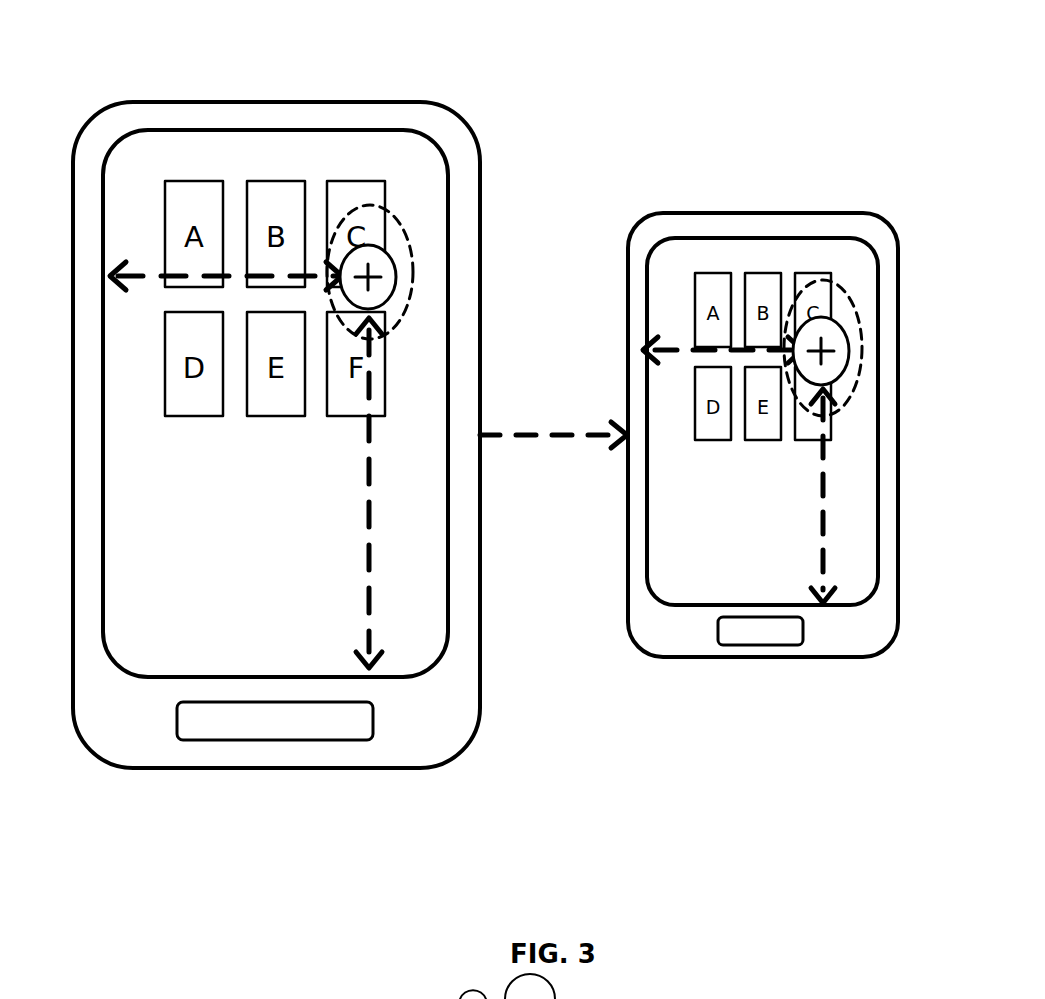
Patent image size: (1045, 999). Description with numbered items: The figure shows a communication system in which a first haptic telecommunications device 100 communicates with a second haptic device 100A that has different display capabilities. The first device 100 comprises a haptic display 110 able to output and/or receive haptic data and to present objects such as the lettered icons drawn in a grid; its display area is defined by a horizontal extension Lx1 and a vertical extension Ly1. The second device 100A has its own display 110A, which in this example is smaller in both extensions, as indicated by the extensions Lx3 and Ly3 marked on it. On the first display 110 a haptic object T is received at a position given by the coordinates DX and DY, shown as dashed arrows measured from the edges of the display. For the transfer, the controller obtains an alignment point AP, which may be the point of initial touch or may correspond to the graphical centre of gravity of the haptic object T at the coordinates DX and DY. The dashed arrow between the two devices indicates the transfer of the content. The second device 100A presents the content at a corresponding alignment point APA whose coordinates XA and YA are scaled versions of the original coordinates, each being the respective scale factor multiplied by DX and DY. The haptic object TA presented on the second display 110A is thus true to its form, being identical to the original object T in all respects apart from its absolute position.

The haptic telecommunications device 100 is at (258, 770).
The haptic display 110 is at (132, 667).
The second haptic device 100A is at (790, 657).
The display of the second haptic device 110A is at (675, 605).
The alignment point AP is at (358, 245).
The haptic object T is at (392, 250).
The corresponding alignment point APA is at (810, 317).
The presented haptic object TA is at (849, 300).
The horizontal coordinate of the alignment point DX is at (227, 302).
The vertical coordinate of the alignment point DY is at (351, 493).
The scaled horizontal coordinate XA is at (722, 376).
The scaled vertical coordinate YA is at (808, 496).
The horizontal extension of the display Lx1 is at (177, 654).
The vertical extension of the display Ly1 is at (130, 609).
The horizontal extension of the second display Lx3 is at (709, 580).
The vertical extension of the second display Ly3 is at (675, 544).